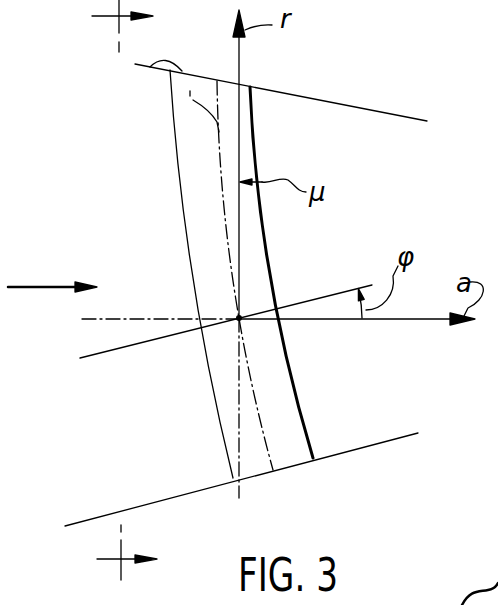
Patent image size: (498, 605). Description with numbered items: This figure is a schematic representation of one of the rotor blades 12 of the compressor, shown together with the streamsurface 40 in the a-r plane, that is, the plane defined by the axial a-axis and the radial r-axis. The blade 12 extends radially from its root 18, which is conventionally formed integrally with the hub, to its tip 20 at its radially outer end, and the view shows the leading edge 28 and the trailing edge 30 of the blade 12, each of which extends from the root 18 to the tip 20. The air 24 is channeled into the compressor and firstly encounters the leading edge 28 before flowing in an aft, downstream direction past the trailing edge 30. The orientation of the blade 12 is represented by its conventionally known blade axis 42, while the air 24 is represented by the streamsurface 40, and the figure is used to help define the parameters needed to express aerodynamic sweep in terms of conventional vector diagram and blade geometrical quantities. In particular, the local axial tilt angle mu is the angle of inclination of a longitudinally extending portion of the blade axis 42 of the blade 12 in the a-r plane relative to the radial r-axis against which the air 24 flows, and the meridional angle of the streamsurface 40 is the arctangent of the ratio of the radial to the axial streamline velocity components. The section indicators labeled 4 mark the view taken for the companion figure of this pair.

The section line of FIG. 4 is at (138, 290).
The rotor blade 12 is at (158, 138).
The root 18 is at (288, 466).
The tip 20 is at (160, 64).
The air 24 is at (38, 286).
The leading edge 28 is at (204, 187).
The trailing edge 30 is at (259, 153).
The streamsurface 40 is at (131, 348).
The blade axis 42 is at (191, 82).